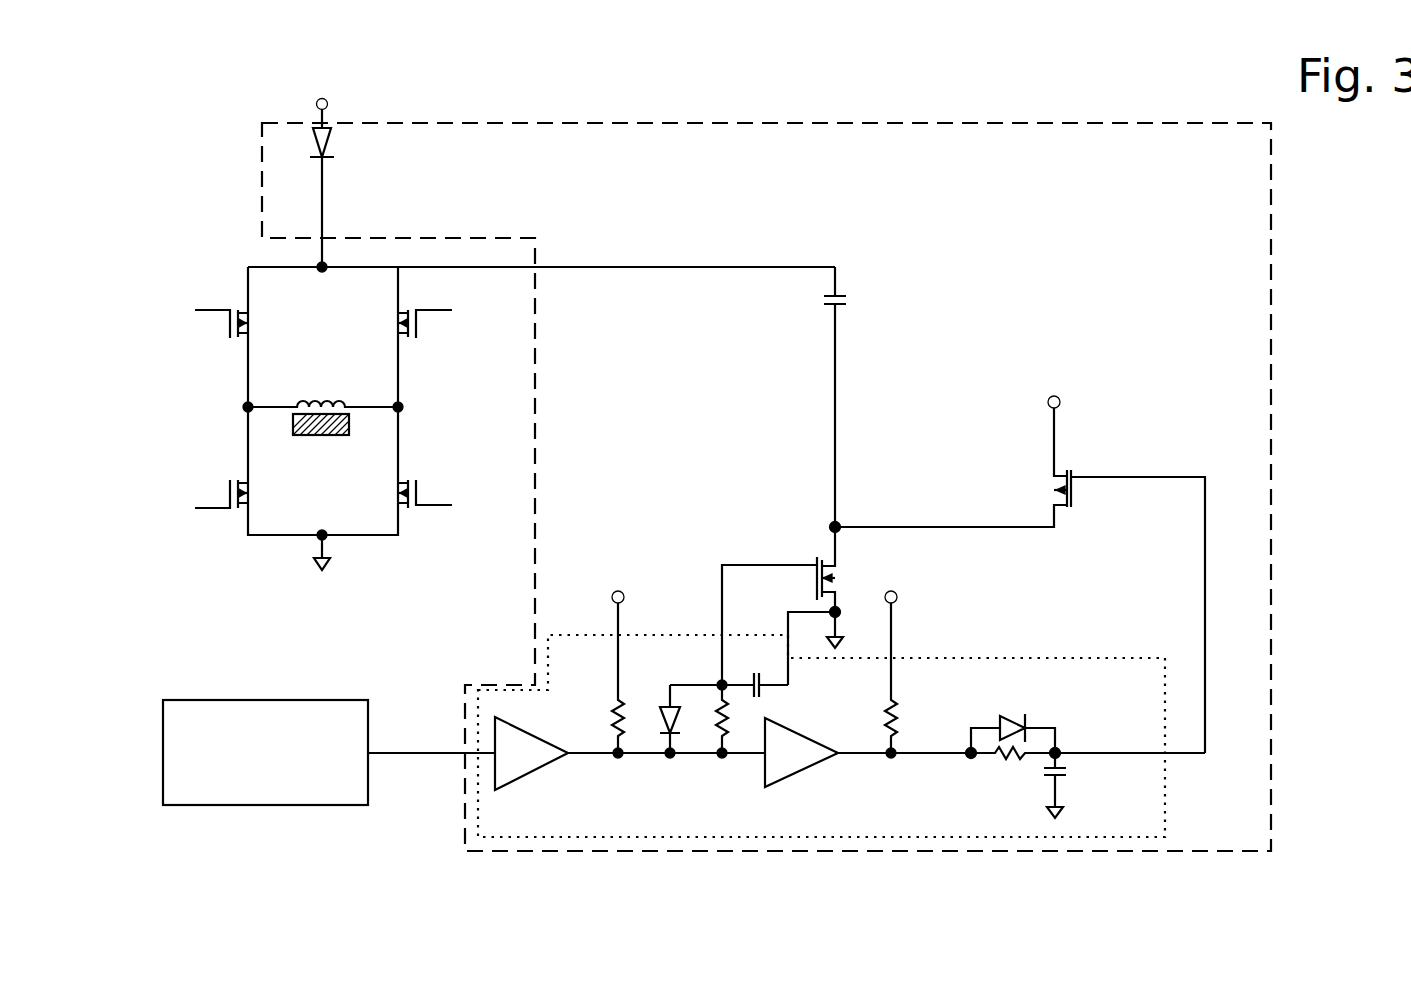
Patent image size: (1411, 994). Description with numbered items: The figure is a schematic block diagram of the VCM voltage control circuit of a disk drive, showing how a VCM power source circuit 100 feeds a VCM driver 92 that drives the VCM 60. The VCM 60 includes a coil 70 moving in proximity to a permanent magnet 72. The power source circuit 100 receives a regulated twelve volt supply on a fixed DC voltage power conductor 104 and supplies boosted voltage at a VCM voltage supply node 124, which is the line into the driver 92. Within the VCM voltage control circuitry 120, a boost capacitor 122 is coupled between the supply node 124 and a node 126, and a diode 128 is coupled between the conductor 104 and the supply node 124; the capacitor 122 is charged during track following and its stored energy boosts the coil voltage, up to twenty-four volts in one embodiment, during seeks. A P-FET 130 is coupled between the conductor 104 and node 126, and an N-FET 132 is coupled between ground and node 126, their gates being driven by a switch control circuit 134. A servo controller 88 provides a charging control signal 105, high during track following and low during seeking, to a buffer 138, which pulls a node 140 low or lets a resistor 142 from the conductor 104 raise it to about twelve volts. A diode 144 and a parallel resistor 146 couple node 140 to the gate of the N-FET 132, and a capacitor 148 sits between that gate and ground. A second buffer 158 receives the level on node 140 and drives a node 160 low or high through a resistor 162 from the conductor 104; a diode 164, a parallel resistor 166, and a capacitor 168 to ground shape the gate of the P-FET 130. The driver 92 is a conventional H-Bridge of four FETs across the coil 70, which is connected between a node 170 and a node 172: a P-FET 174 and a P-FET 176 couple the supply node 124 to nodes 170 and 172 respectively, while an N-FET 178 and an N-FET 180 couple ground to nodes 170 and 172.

The VCM 60 is at (300, 378).
The coil 70 is at (335, 402).
The permanent magnet 72 is at (320, 437).
The servo controller 88 is at (283, 806).
The VCM driver 92 is at (150, 222).
The VCM power source circuit 100 is at (690, 123).
The fixed DC voltage power conductor 104 is at (317, 102).
The charging control signal 105 is at (410, 756).
The VCM voltage control circuitry 120 is at (918, 207).
The boost capacitor 122 is at (841, 298).
The VCM voltage supply node 124 is at (337, 268).
The node 126 is at (838, 525).
The diode 128 is at (335, 150).
The P-channel field effect transistor 130 is at (1074, 508).
The N-channel field effect transistor 132 is at (810, 592).
The switch control circuit 134 is at (975, 658).
The buffer 138 is at (545, 770).
The node 140 is at (640, 758).
The resistor 142 is at (614, 722).
The diode 144 is at (652, 712).
The resistor 146 is at (730, 722).
The capacitor 148 is at (755, 680).
The buffer 158 is at (815, 770).
The node 160 is at (930, 758).
The resistor 162 is at (895, 722).
The diode 164 is at (1004, 724).
The resistor 166 is at (1006, 760).
The capacitor 168 is at (1062, 752).
The node 170 is at (246, 408).
The node 172 is at (401, 409).
The P-FET 174 is at (220, 330).
The P-FET 176 is at (420, 340).
The N-FET 178 is at (220, 493).
The N-FET 180 is at (420, 488).